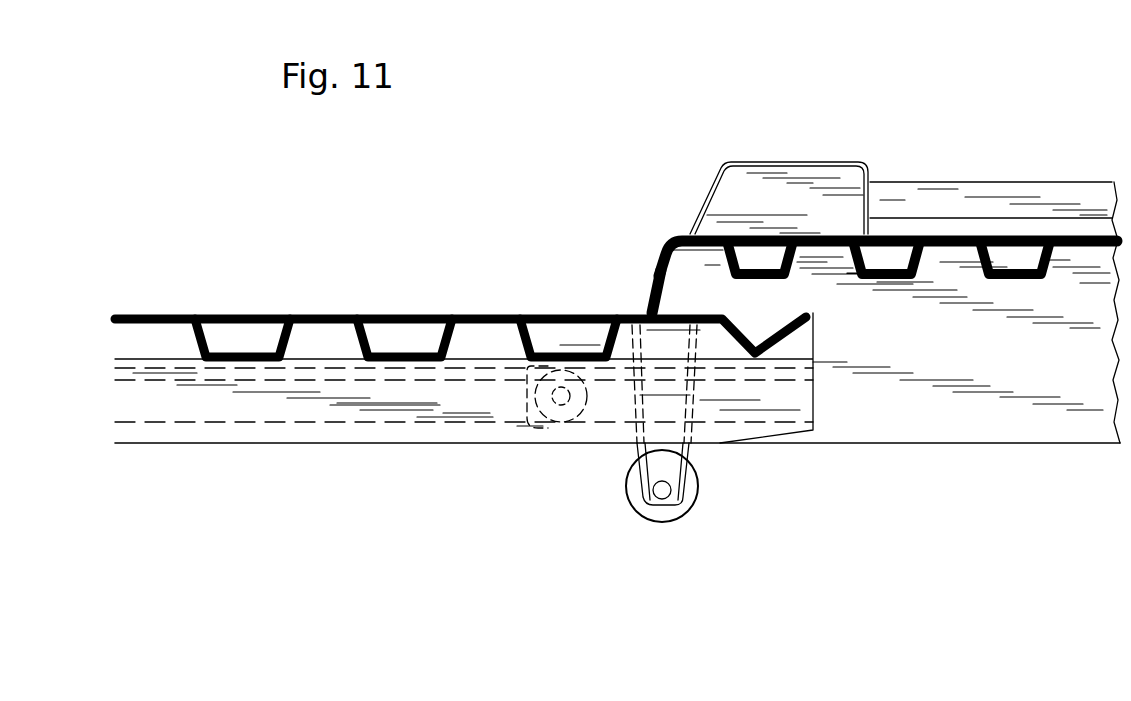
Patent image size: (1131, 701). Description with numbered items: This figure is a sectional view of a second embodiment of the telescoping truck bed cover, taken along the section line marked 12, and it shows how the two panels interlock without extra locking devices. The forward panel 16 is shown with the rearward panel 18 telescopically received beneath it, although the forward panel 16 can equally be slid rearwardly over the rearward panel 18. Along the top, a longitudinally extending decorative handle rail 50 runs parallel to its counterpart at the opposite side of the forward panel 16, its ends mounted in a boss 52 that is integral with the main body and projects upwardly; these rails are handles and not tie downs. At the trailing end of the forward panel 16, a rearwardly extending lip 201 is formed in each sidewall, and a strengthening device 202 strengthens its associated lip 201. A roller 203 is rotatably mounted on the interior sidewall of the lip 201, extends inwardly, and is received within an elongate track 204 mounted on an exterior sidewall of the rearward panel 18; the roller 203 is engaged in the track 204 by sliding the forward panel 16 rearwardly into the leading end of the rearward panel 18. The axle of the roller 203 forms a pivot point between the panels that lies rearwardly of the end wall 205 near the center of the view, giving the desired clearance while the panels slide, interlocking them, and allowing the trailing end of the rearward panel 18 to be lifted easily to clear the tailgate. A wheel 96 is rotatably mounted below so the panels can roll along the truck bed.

The section line 12- 12 is at (564, 133).
The forward panel 16 is at (671, 228).
The rearward panel 18 is at (404, 304).
The decorative handle rail 50 is at (1052, 182).
The boss 52 is at (840, 163).
The wheel 96 is at (680, 516).
The lip 201 is at (535, 432).
The strengthening device 202 is at (702, 418).
The roller 203 is at (540, 428).
The track 204 is at (307, 424).
The end wall 205 is at (646, 304).